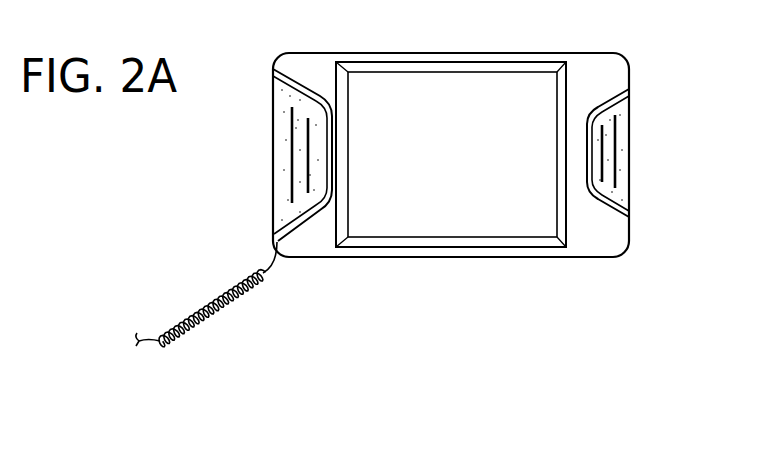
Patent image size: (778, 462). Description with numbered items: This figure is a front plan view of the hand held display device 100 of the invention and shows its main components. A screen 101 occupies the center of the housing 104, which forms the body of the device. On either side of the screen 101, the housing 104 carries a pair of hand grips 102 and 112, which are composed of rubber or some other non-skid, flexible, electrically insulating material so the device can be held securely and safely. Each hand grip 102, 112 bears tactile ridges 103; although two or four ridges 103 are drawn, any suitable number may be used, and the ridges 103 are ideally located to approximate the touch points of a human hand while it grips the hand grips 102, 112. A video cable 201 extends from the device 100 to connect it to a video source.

The display device 100 is at (447, 130).
The screen 101 is at (528, 88).
The hand grip 102 is at (280, 186).
The tactile ridges 103 is at (307, 146).
The housing 104 is at (307, 67).
The hand grip 112 is at (631, 194).
The video cable 201 is at (220, 316).